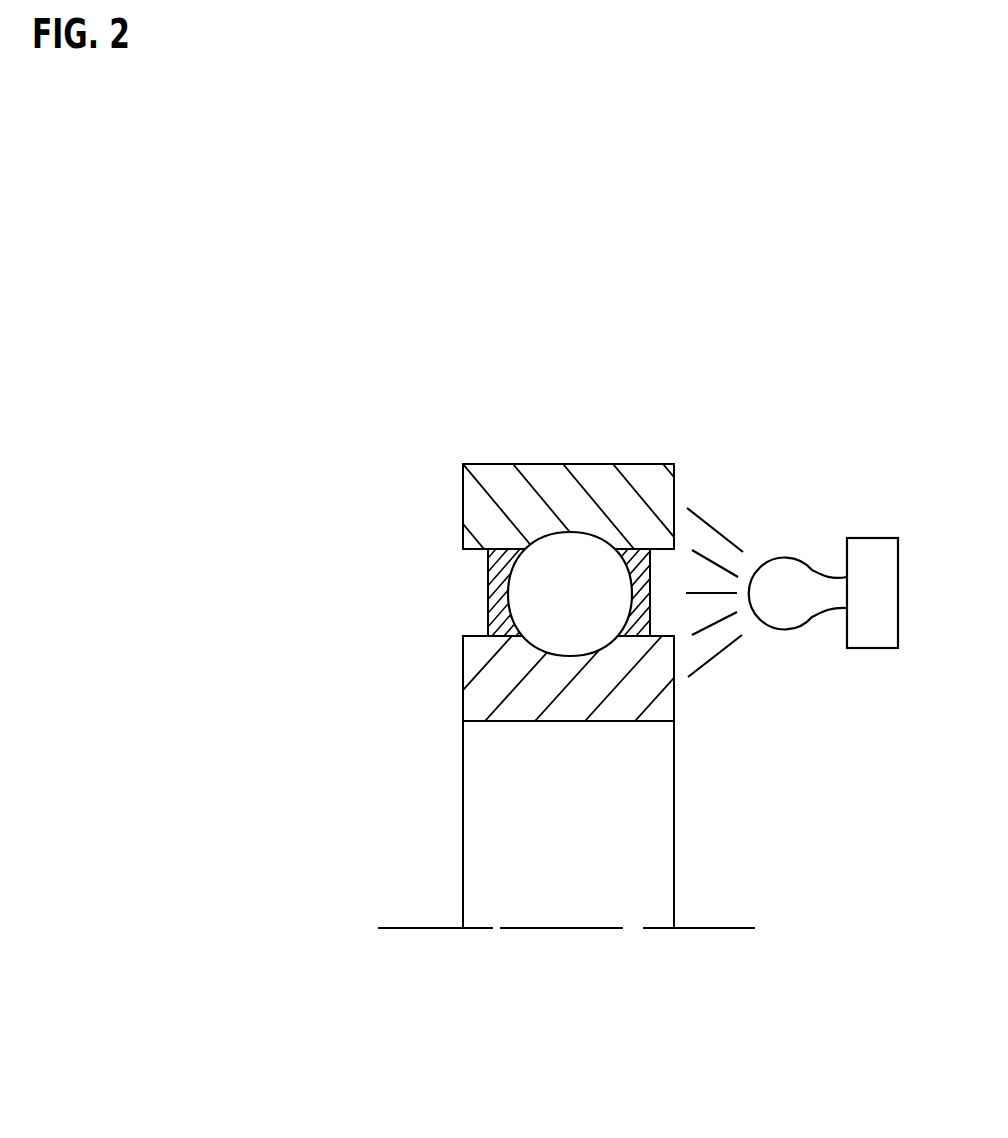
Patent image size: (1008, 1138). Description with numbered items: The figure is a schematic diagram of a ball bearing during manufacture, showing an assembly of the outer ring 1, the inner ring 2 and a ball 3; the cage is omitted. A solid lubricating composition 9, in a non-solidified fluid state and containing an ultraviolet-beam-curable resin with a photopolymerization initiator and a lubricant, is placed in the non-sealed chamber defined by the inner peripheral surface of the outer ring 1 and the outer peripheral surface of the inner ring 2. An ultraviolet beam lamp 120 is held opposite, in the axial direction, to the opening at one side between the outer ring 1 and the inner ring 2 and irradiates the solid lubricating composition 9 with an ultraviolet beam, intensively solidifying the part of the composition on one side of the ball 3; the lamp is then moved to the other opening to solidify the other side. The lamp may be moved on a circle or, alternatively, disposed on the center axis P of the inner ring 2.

The outer ring 1 is at (570, 492).
The inner ring 2 is at (558, 722).
The ball 3 is at (525, 592).
The solid lubricating composition 9 is at (650, 622).
The ultraviolet beam lamp 120 is at (785, 570).
The center axis P is at (708, 930).